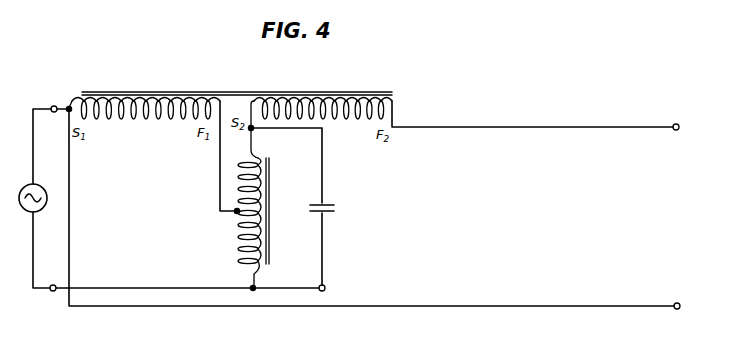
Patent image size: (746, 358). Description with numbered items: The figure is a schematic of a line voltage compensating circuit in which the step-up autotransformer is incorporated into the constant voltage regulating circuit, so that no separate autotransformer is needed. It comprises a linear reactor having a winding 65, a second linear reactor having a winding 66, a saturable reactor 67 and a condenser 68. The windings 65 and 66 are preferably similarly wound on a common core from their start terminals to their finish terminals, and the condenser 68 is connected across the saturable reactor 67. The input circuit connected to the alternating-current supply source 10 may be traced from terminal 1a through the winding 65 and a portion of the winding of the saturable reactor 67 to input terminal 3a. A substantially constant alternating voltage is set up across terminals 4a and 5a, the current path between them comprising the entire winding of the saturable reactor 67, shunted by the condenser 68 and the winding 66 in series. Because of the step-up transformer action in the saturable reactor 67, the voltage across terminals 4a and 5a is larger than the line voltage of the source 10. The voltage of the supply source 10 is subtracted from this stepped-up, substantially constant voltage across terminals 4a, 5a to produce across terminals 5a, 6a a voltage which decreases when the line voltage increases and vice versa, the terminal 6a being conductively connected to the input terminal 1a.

The input terminal 1a is at (54, 106).
The input terminal 3a is at (53, 291).
The terminal 4a is at (325, 287).
The terminal 5a is at (679, 125).
The terminal 6a is at (680, 303).
The alternating-current supply source 10 is at (40, 186).
The winding 65 is at (140, 121).
The winding 66 is at (305, 119).
The saturable reactor 67 is at (238, 251).
The condenser 68 is at (337, 209).